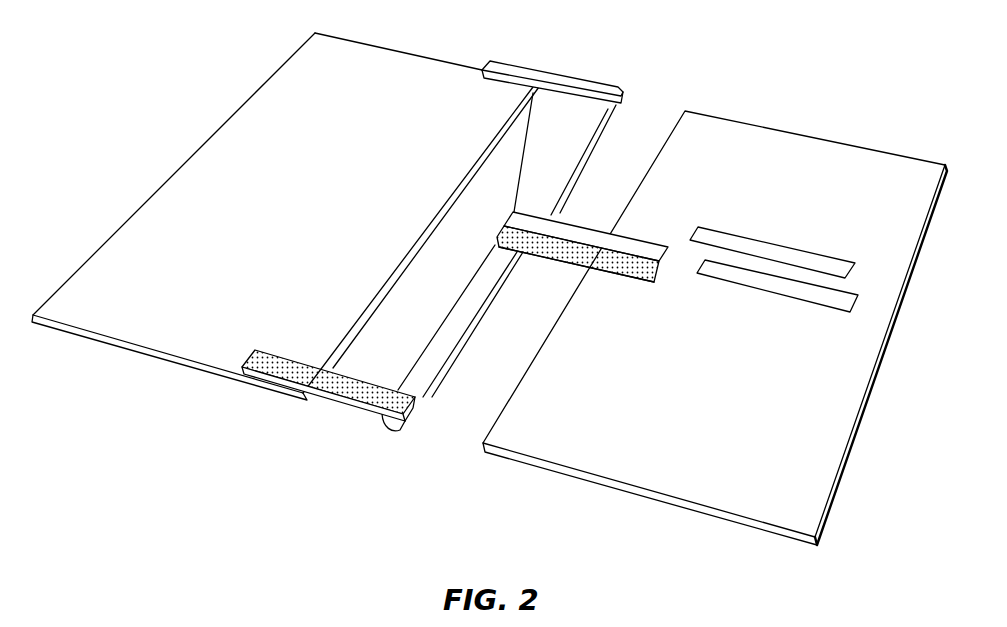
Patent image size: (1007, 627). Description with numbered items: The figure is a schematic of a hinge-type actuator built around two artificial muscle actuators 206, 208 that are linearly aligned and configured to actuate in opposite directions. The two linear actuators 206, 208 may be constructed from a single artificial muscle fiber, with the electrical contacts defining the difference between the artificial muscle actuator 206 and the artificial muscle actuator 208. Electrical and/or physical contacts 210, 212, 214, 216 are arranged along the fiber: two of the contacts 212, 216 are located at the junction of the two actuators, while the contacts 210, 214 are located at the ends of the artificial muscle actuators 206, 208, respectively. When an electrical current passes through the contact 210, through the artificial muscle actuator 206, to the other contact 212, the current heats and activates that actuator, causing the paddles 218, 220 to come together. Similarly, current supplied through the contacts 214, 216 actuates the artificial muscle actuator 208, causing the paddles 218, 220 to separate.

The artificial muscle actuator 206 is at (550, 181).
The artificial muscle actuator 208 is at (450, 319).
The contact 210 is at (553, 80).
The contact 212 is at (627, 242).
The contact 214 is at (342, 410).
The contact 216 is at (617, 275).
The paddle 218 is at (830, 148).
The paddle 220 is at (290, 103).